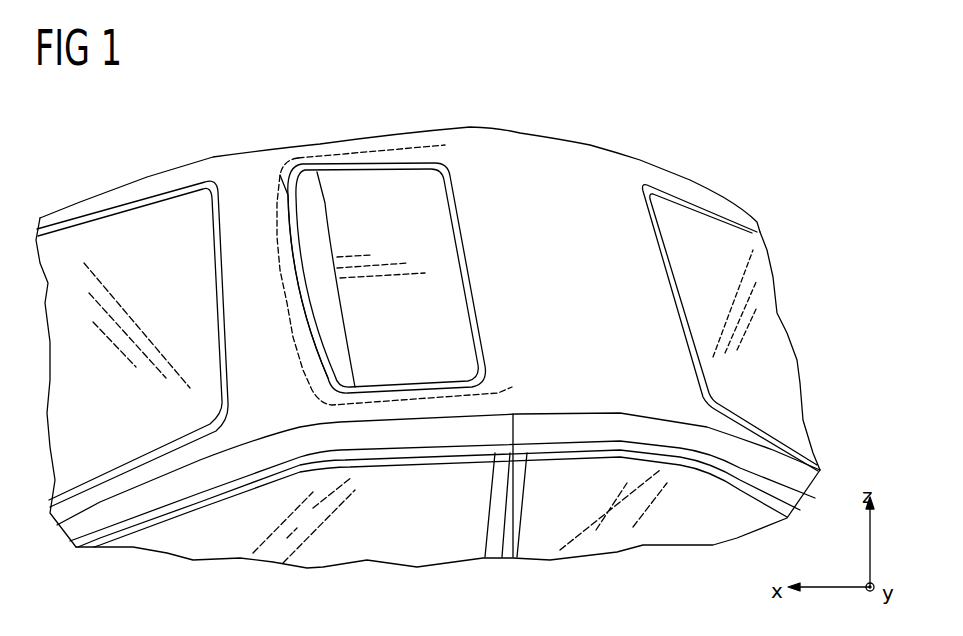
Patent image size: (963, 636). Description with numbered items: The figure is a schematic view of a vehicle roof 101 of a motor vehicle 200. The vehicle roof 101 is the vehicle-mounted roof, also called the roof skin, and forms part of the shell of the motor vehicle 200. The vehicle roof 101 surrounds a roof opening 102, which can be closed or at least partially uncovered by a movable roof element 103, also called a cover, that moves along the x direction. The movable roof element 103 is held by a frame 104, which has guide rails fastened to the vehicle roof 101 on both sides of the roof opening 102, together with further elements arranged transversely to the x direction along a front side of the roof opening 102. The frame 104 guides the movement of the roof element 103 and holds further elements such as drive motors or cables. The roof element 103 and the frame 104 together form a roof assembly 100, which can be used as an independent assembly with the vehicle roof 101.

The roof assembly 100 is at (400, 215).
The vehicle roof 101 is at (548, 142).
The roof opening 102 is at (317, 355).
The movable roof element 103 is at (428, 228).
The frame 104 is at (367, 150).
The motor vehicle 200 is at (718, 158).